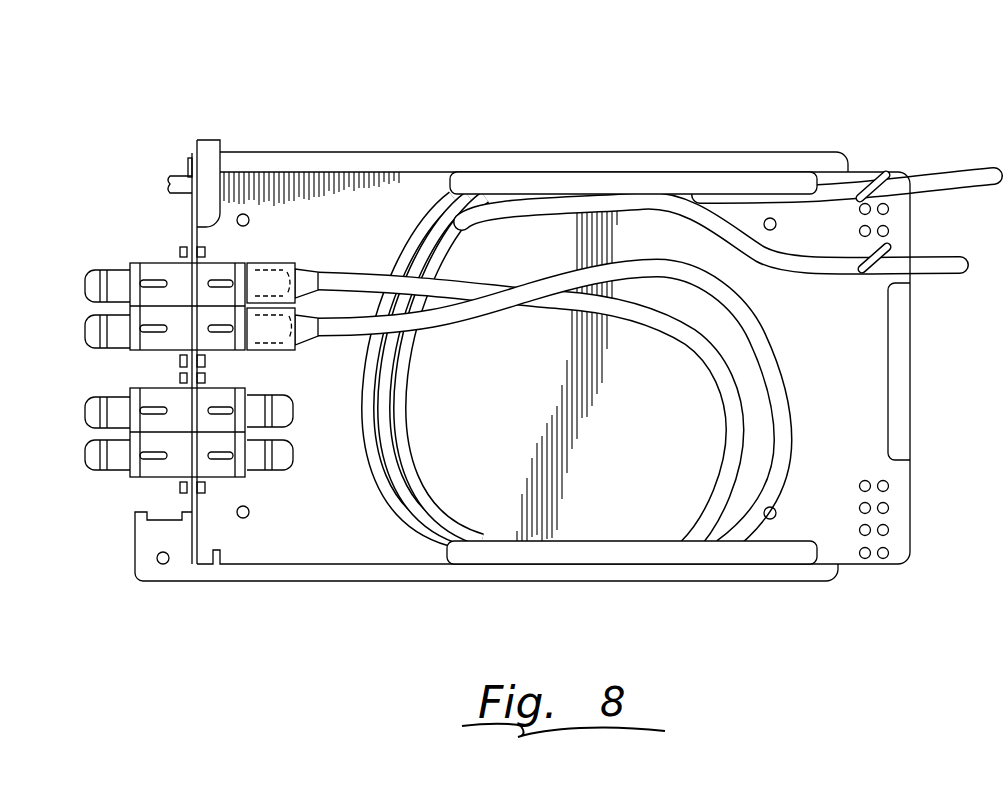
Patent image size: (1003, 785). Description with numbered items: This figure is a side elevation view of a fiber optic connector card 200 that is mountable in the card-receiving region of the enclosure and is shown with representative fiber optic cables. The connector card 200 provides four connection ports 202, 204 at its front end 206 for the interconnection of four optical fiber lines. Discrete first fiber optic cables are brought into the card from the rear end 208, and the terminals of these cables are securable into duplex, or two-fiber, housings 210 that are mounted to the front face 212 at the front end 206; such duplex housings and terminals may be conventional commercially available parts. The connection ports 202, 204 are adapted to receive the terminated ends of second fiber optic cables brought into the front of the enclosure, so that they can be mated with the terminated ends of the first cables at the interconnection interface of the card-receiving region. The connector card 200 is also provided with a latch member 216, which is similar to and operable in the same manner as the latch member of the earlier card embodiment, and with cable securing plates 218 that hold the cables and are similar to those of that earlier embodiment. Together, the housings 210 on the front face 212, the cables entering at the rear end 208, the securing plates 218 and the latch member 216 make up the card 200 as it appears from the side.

The fiber optic connector card 200 is at (387, 133).
The connection port 202 is at (97, 297).
The connection port 204 is at (92, 336).
The front end 206 is at (240, 490).
The rear end 208 is at (910, 392).
The duplex housing 210 is at (172, 273).
The front face 212 is at (195, 233).
The latch member 216 is at (190, 176).
The cable securing plate 218 is at (838, 270).